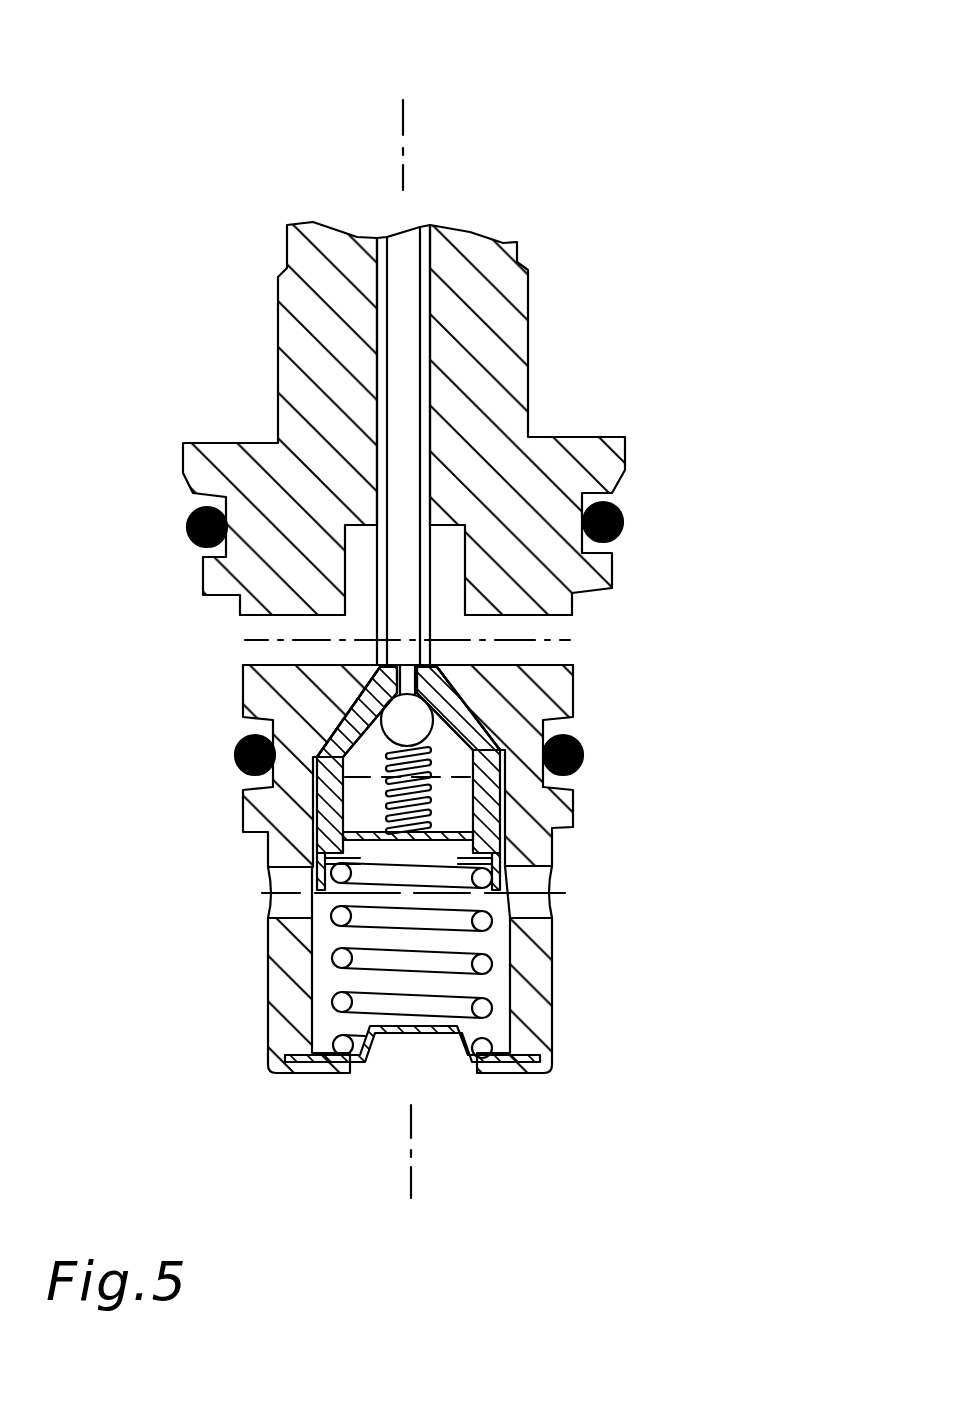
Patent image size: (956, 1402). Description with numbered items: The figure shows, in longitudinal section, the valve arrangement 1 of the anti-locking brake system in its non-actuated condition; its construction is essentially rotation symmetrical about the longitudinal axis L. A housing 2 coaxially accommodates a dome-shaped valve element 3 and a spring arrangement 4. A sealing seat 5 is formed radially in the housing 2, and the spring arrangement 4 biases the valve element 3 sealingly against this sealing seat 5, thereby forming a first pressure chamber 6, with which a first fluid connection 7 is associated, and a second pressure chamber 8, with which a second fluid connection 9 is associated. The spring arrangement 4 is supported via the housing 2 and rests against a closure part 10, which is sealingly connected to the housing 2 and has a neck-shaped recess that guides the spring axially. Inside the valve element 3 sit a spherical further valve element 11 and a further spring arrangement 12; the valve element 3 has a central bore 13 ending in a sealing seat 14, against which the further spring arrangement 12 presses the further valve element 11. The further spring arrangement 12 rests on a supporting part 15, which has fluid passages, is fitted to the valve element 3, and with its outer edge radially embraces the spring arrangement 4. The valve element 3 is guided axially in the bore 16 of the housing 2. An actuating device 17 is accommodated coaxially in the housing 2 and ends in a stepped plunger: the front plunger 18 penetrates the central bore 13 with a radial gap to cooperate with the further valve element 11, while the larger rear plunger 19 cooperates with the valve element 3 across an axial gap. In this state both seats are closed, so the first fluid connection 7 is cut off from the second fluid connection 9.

The valve arrangement 1 is at (138, 60).
The housing 2 is at (514, 283).
The valve element 3 is at (505, 735).
The spring arrangement 4 is at (485, 960).
The sealing seat 5 is at (445, 683).
The first pressure chamber 6 is at (327, 978).
The first fluid connection 7 is at (290, 907).
The second pressure chamber 8 is at (200, 476).
The second fluid connection 9 is at (255, 622).
The closure part 10 is at (535, 1053).
The further valve element 11 is at (405, 718).
The further spring arrangement 12 is at (387, 790).
The central bore 13 is at (425, 690).
The sealing seat 14 is at (385, 670).
The supporting part 15 is at (500, 838).
The bore 16 is at (507, 920).
The actuating device 17 is at (395, 440).
The front plunger 18 is at (407, 660).
The rear plunger 19 is at (400, 648).